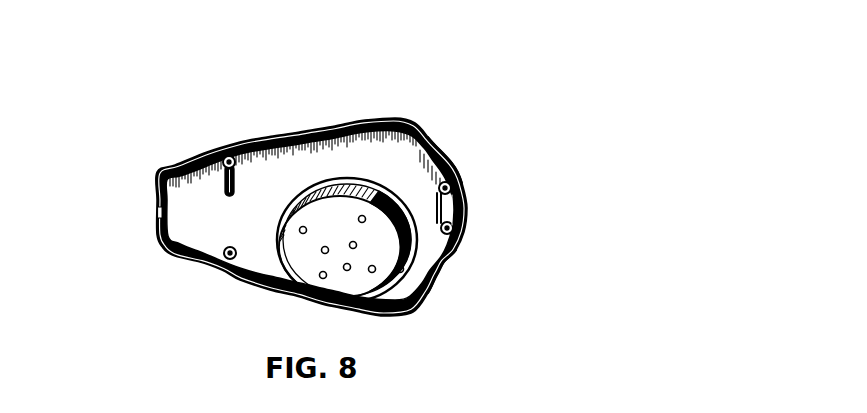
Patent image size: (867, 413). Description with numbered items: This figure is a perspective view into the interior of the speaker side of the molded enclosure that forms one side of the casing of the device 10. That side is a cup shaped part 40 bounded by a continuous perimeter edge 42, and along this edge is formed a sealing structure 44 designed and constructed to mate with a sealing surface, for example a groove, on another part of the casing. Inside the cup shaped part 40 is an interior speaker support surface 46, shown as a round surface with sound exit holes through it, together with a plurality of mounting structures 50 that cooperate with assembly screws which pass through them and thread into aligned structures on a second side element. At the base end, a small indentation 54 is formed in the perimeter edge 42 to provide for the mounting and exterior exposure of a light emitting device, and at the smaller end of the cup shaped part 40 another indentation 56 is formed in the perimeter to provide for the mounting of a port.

The device 10 is at (379, 88).
The cup shaped part 40 is at (303, 114).
The continuous perimeter edge 42 is at (448, 157).
The sealing structure 44 is at (460, 253).
The interior speaker support surface 46 is at (278, 245).
The mounting structures 50 is at (230, 156).
The small indentation 54 is at (468, 210).
The indentation 56 is at (155, 214).